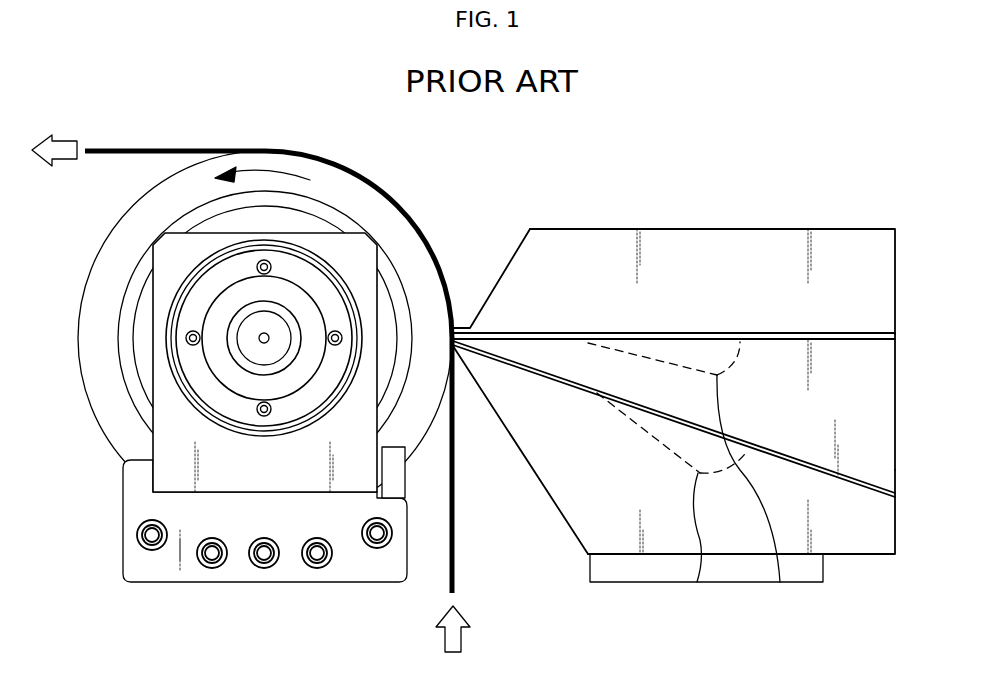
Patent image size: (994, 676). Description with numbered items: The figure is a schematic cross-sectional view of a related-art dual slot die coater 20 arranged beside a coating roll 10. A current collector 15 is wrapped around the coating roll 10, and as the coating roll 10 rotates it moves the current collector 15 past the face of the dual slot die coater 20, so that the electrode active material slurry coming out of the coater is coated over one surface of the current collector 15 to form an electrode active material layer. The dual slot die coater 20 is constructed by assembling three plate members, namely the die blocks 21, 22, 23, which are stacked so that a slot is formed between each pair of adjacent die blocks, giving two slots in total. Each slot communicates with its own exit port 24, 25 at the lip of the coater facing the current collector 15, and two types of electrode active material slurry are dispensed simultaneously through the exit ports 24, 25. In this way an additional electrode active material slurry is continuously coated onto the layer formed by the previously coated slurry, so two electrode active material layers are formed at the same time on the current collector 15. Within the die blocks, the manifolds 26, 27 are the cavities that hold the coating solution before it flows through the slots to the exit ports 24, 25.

The coating roll 10 is at (78, 338).
The current collector 15 is at (456, 540).
The dual slot die coater 20 is at (718, 205).
The die block 21 is at (896, 523).
The die block 22 is at (896, 408).
The die block 23 is at (896, 282).
The exit port 24 is at (497, 350).
The exit port 25 is at (500, 327).
The manifold 26 is at (697, 582).
The manifold 27 is at (780, 582).